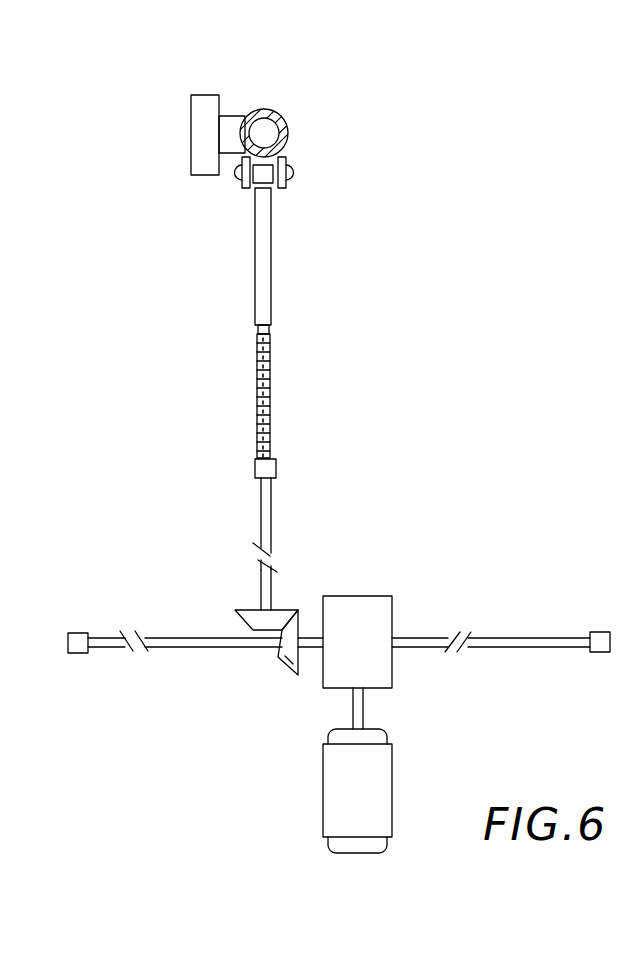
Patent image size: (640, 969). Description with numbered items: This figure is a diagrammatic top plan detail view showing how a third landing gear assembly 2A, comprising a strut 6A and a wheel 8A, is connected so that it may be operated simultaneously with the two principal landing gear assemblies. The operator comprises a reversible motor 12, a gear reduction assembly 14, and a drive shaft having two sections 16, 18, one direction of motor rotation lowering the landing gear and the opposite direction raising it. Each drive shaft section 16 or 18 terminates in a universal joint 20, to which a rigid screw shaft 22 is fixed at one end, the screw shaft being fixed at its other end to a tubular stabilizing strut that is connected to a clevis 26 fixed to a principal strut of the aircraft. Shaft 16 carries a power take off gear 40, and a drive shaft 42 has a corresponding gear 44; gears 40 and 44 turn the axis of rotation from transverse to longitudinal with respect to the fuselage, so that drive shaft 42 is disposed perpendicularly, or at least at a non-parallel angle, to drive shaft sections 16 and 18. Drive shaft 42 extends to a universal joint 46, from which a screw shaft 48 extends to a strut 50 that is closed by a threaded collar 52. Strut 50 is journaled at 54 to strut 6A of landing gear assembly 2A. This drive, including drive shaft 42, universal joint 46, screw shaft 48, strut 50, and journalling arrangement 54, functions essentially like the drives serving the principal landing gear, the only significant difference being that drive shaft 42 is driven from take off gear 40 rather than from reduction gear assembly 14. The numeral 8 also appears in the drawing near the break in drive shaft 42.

The third landing gear assembly 2A is at (303, 82).
The strut 6A is at (288, 125).
The wheel 8A is at (206, 168).
The journalling arrangement 54 is at (325, 176).
The strut 50 is at (265, 268).
The threaded collar 52 is at (250, 330).
The screw shaft 48 is at (265, 417).
The universal joint 46 is at (258, 474).
The drive shaft 42 is at (270, 527).
The rod lower portion 8 is at (348, 540).
The gear 44 is at (232, 612).
The power take off gear 40 is at (290, 668).
The drive shaft section 16 is at (107, 642).
The drive shaft section 18 is at (492, 641).
The universal joint 20 is at (80, 636).
The gear reduction assembly 14 is at (371, 661).
The motor 12 is at (371, 803).
The screw shaft 22 is at (104, 230).
The clevis 26 is at (420, 360).